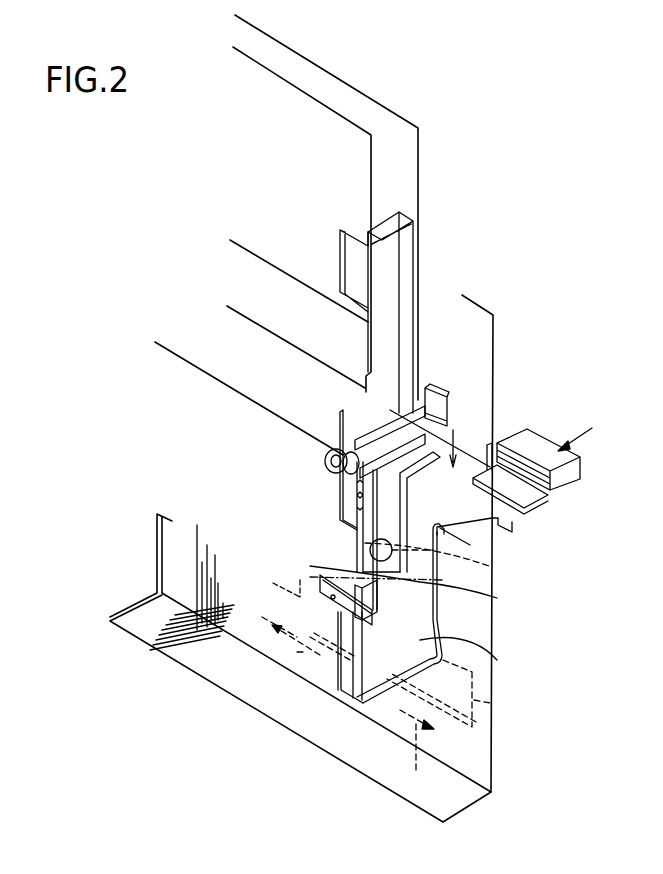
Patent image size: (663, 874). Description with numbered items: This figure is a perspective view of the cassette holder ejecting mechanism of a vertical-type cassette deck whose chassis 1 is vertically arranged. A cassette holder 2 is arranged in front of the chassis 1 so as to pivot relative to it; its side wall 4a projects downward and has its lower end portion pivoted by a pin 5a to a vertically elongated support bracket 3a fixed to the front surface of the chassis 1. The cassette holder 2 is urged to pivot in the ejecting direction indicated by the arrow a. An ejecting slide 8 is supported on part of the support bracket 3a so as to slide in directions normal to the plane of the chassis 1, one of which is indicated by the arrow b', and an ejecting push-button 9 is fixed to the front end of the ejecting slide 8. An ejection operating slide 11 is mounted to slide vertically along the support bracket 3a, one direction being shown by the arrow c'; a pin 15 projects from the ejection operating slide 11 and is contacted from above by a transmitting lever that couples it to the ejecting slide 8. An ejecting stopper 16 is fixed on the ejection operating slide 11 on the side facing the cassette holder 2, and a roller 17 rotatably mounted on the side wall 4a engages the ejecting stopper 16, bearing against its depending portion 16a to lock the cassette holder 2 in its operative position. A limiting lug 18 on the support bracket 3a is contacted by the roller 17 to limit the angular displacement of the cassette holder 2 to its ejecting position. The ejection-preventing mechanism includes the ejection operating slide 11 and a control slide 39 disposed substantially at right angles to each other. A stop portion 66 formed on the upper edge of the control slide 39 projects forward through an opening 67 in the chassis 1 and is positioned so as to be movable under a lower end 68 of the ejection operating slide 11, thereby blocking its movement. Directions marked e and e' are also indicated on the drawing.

The chassis 1 is at (262, 700).
The cassette holder 2 is at (400, 116).
The support bracket 3a is at (422, 612).
The side wall 4a is at (347, 540).
The pin 5a is at (425, 635).
The ejecting slide 8 is at (510, 490).
The ejecting push-button 9 is at (562, 487).
The ejection operating slide 11 is at (388, 292).
The pin 15 is at (490, 572).
The ejecting stopper 16 is at (330, 456).
The depending portion 16a is at (353, 490).
The roller 17 is at (350, 466).
The limiting lug 18 is at (438, 400).
The control slide 39 is at (490, 703).
The stop portion 66 is at (443, 585).
The opening 67 is at (330, 603).
The lower end 68 is at (330, 562).
The ejecting direction arrow a is at (390, 412).
The sliding direction arrow b' is at (575, 425).
The sliding direction arrow c' is at (466, 440).
The direction indicator e is at (291, 661).
The direction indicator e' is at (417, 753).